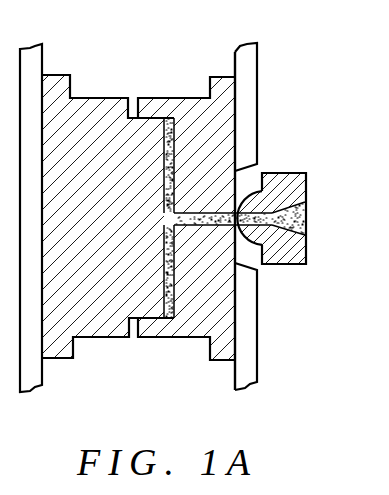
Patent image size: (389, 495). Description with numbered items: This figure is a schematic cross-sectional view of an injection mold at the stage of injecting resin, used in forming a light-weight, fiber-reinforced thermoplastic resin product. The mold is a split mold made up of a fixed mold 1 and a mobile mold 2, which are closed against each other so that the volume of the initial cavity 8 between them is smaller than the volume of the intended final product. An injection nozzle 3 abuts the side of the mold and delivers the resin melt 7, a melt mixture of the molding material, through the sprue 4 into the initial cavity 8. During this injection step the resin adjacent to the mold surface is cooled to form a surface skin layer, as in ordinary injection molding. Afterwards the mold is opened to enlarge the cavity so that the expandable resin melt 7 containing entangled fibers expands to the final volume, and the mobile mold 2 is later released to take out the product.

The fixed mold 1 is at (177, 97).
The mobile mold 2 is at (98, 103).
The injection nozzle 3 is at (287, 175).
The sprue 4 is at (201, 228).
The resin melt 7 is at (306, 210).
The initial cavity 8 is at (163, 148).